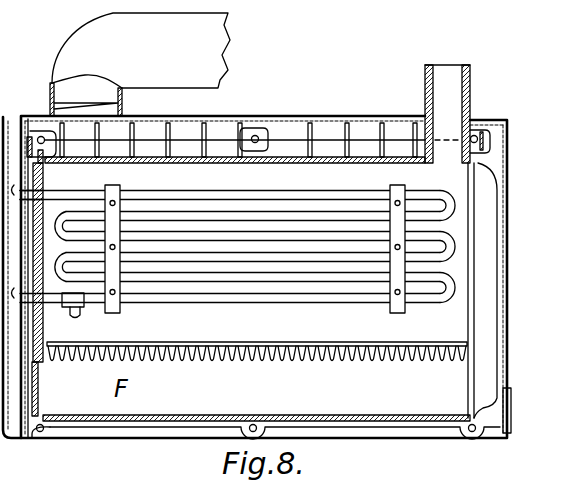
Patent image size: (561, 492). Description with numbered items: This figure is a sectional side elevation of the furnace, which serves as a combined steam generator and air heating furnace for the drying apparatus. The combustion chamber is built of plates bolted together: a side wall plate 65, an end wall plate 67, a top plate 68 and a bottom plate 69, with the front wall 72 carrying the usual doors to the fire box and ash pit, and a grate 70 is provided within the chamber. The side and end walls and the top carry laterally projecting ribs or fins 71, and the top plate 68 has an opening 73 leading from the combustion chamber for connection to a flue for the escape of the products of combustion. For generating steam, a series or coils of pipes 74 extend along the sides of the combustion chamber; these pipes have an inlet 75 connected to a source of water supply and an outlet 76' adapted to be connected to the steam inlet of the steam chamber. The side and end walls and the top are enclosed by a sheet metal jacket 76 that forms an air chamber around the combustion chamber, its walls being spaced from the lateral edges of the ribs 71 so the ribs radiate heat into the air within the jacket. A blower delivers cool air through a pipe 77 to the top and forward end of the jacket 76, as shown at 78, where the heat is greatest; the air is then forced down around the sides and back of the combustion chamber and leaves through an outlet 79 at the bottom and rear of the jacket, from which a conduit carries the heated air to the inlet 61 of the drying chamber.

The jacket 76 is at (253, 263).
The outlet 76' is at (51, 183).
The pipe 77 is at (141, 50).
The inlet connection of pipe to jacket 78 is at (86, 99).
The ribs or fins 71 is at (345, 138).
The inlet 61 is at (239, 126).
The top plate 68 is at (168, 160).
The opening 73 is at (447, 114).
The end wall plate 67 is at (470, 181).
The pipes 74 is at (247, 280).
The inlet 75 is at (53, 302).
The front wall 72 is at (45, 336).
The grate 70 is at (293, 358).
The side wall plate 65 is at (258, 278).
The bottom plate 69 is at (243, 417).
The outlet 79 is at (502, 412).